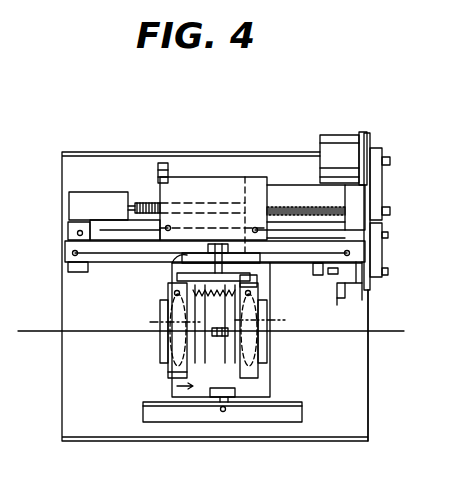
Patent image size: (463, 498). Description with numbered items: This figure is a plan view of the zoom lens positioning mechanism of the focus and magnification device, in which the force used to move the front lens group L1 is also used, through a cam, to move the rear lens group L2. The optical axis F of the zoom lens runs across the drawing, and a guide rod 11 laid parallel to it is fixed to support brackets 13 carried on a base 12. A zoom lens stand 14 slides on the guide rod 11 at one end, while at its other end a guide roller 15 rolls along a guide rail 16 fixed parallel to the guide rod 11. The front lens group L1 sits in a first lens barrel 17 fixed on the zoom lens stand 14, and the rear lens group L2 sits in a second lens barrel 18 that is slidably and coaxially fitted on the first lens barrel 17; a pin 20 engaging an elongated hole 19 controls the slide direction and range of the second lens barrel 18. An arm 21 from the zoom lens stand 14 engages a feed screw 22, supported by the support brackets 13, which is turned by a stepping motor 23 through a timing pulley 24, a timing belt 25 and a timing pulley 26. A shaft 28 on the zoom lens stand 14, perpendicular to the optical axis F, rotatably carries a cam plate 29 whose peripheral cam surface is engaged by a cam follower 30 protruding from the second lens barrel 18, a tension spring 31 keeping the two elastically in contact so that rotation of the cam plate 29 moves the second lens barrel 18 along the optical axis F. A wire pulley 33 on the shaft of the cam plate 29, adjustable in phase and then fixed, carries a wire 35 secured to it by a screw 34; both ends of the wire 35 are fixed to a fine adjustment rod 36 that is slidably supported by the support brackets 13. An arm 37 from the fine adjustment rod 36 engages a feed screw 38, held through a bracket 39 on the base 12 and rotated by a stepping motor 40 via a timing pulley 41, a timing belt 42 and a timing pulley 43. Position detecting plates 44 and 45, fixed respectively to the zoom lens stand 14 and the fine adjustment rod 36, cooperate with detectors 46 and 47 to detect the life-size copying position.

The guide rod 11 is at (100, 234).
The base 12 is at (78, 387).
The support brackets 13 is at (78, 206).
The zoom lens stand 14 is at (175, 386).
The guide roller 15 is at (227, 412).
The guide rail 16 is at (183, 410).
The first lens barrel 17 is at (162, 362).
The second lens barrel 18 is at (258, 370).
The elongated hole 19 is at (170, 372).
The pin 20 is at (245, 342).
The arm 21 is at (245, 177).
The feed screw 22 is at (283, 205).
The stepping motor 23 is at (334, 146).
The timing pulley 24 is at (390, 161).
The timing belt 25 is at (381, 185).
The timing pulley 26 is at (391, 212).
The shaft 28 is at (165, 282).
The cam plate 29 is at (257, 278).
The cam follower 30 is at (257, 292).
The tension spring 31 is at (224, 322).
The wire pulley 33 is at (170, 246).
The screw 34 is at (217, 242).
The wire 35 is at (125, 257).
The fine adjustment rod 36 is at (112, 247).
The arm 37 is at (360, 288).
The feed screw 38 is at (339, 301).
The bracket 39 is at (331, 275).
The stepping motor 40 is at (370, 225).
The timing pulley 41 is at (387, 235).
The timing belt 42 is at (379, 250).
The timing pulley 43 is at (387, 273).
The position detecting plate 44 is at (212, 195).
The position detecting plate 45 is at (367, 300).
The detector 46 is at (169, 173).
The detector 47 is at (344, 302).
The optical axis F is at (33, 330).
The front lens group L1 is at (165, 321).
The rear lens group L2 is at (267, 324).